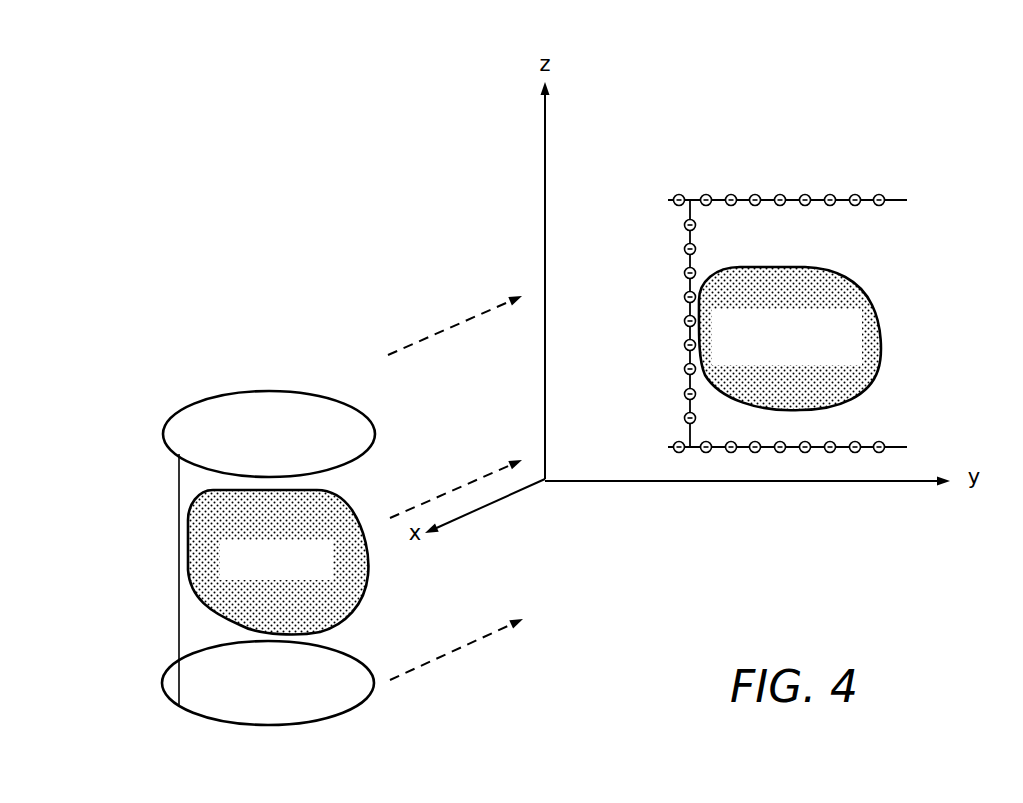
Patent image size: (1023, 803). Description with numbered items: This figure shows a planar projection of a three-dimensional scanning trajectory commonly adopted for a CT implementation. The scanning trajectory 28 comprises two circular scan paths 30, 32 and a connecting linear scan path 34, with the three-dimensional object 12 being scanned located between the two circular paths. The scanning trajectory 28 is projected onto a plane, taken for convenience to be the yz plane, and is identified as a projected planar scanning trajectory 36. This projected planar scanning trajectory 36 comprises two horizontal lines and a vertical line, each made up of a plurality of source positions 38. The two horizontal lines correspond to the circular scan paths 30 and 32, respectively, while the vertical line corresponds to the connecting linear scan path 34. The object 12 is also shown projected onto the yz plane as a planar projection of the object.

The 3D object 12 is at (186, 556).
The scanning trajectory 28 is at (92, 491).
The circular scan path 30 is at (266, 391).
The circular scan path 32 is at (168, 678).
The connecting linear scan path 34 is at (178, 492).
The projected planar scanning trajectory 36 is at (975, 231).
The source positions 38 is at (820, 196).